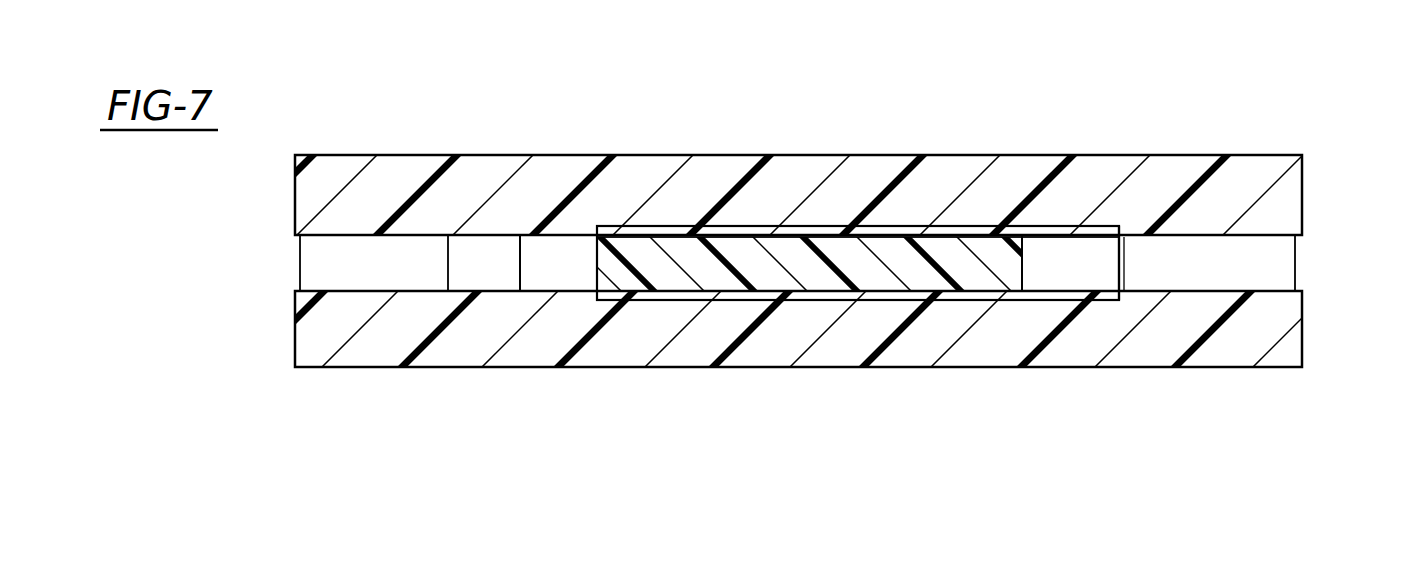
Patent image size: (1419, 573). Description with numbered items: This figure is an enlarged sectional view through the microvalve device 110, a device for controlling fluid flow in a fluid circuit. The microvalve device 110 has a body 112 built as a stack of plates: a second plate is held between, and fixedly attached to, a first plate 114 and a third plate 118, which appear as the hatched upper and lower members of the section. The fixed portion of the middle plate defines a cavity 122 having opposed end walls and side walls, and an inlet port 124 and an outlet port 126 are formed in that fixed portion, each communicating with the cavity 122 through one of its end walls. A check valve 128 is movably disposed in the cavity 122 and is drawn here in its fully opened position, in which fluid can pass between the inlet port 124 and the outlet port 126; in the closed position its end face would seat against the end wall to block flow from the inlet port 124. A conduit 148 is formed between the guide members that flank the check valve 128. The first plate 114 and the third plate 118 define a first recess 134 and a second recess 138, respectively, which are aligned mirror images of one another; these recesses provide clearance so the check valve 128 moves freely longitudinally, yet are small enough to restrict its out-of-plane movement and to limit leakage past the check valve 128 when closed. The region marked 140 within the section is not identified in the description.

The microvalve device 110 is at (414, 108).
The body 112 is at (360, 145).
The first plate 114 is at (295, 330).
The third plate 118 is at (1305, 208).
The cavity 122 is at (1108, 247).
The inlet port 124 is at (1293, 260).
The outlet port 126 is at (307, 280).
The check valve 128 is at (637, 296).
The first recess 134 is at (1012, 300).
The second recess 138 is at (1028, 235).
The cavity 140 is at (1072, 278).
The conduit 148 is at (573, 245).